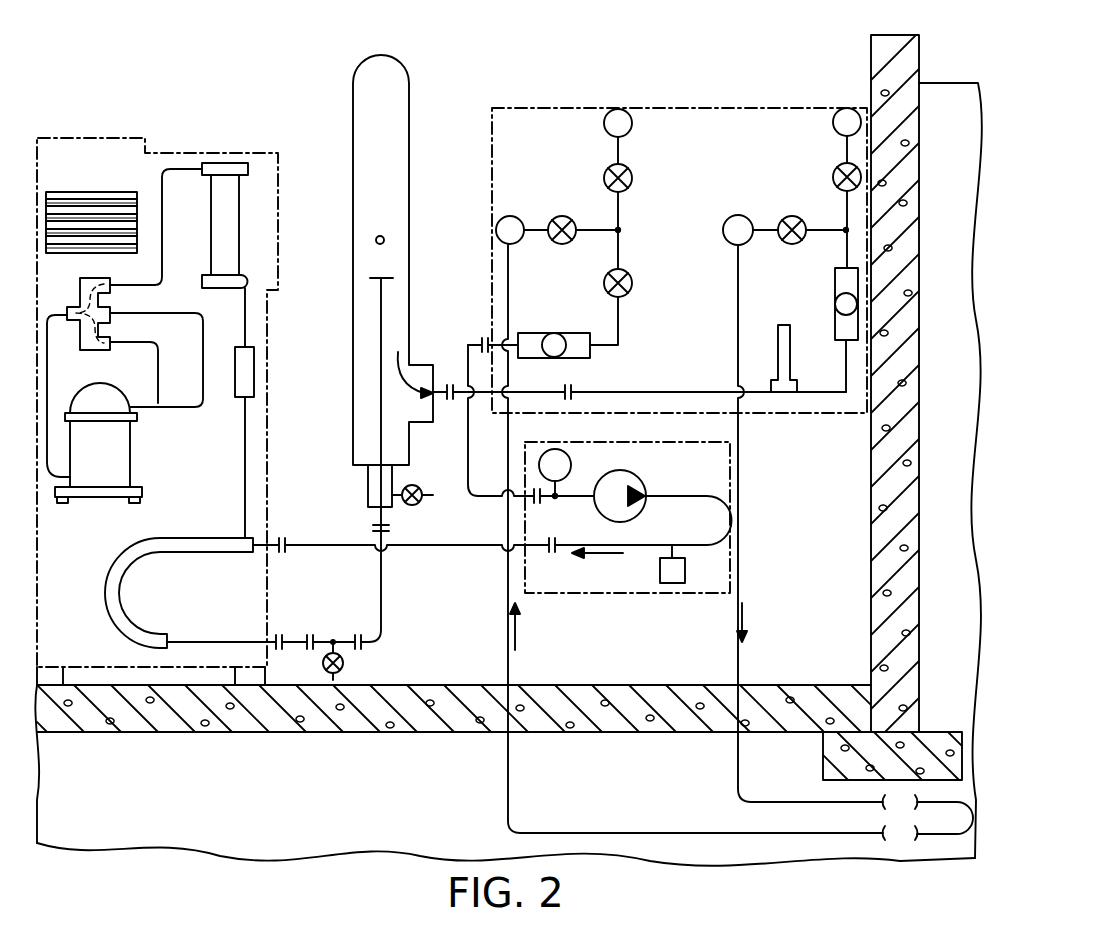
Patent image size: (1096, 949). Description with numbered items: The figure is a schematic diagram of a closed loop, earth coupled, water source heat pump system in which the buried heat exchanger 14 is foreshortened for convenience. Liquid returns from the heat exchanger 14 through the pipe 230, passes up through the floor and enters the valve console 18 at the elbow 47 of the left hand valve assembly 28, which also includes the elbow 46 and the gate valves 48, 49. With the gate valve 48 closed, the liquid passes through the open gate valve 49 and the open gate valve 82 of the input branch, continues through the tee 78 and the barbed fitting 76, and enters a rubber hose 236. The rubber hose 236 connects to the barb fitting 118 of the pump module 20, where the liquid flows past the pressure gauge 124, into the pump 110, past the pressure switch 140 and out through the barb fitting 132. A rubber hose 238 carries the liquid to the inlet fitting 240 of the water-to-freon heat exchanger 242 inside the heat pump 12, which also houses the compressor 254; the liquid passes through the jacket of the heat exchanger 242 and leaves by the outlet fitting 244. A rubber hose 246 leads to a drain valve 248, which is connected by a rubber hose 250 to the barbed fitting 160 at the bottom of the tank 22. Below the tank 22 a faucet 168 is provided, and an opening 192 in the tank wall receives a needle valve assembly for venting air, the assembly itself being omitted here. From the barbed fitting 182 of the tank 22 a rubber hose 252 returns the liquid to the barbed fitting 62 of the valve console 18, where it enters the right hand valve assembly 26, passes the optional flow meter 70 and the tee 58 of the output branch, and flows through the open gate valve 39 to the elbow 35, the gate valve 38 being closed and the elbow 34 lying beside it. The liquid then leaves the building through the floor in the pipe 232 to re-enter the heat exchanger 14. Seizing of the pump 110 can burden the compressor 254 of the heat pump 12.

The heat pump 12 is at (272, 405).
The heat exchanger 14 is at (942, 838).
The valve console 18 is at (532, 103).
The pump module 20 is at (733, 499).
The tank 22 is at (352, 86).
The right hand valve assembly 26 is at (852, 104).
The left hand valve assembly 28 is at (586, 84).
The elbow 34 is at (832, 125).
The elbow 35 is at (733, 215).
The gate valve 38 is at (833, 177).
The gate valve 39 is at (787, 244).
The elbow 46 is at (634, 126).
The elbow 47 is at (515, 217).
The gate valve 48 is at (633, 181).
The gate valve 49 is at (568, 217).
The tee 58 is at (835, 318).
The barbed fitting 62 is at (570, 385).
The flow meter 70 is at (790, 355).
The barbed fitting 76 is at (483, 337).
The tee 78 is at (558, 333).
The gate valve 82 is at (632, 282).
The pump 110 is at (644, 483).
The barb fitting 118 is at (540, 505).
The pressure gauge 124 is at (575, 455).
The barb fitting 132 is at (553, 553).
The pressure switch 140 is at (688, 568).
The barbed fitting 160 is at (373, 528).
The faucet 168 is at (418, 504).
The barbed fitting 182 is at (452, 384).
The opening 192 is at (378, 236).
The pipe 230 is at (510, 592).
The pipe 232 is at (740, 585).
The rubber hose 236 is at (470, 455).
The rubber hose 238 is at (431, 548).
The inlet fitting 240 is at (282, 536).
The water-to-freon heat exchanger 242 is at (108, 566).
The outlet fitting 244 is at (277, 636).
The rubber hose 246 is at (292, 640).
The drain valve 248 is at (345, 663).
The rubber hose 250 is at (370, 641).
The rubber hose 252 is at (483, 395).
The compressor 254 is at (122, 455).